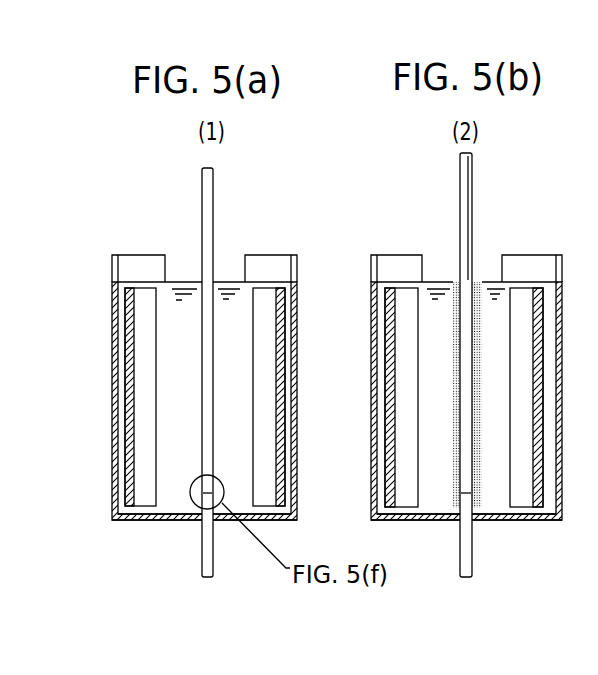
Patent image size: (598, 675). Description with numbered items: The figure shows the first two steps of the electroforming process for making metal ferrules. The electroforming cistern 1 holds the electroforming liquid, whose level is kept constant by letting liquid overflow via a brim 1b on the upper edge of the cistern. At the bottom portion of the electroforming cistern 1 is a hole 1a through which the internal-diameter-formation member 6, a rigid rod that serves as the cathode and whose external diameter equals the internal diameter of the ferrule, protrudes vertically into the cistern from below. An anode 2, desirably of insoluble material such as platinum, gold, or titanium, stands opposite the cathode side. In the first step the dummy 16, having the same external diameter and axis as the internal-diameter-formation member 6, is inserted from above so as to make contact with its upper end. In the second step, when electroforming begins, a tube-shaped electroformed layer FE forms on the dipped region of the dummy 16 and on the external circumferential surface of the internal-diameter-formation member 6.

In FIG. 5A, the electroforming cistern 1 is at (297, 414).
In FIG. 5B, the electroforming cistern 1 is at (562, 405).
In FIG. 5A, the hole 1a is at (197, 520).
In FIG. 5B, the hole 1a is at (457, 518).
In FIG. 5A, the brim 1b is at (297, 271).
In FIG. 5B, the brim 1b is at (562, 272).
In FIG. 5A, the anode 2 is at (145, 495).
In FIG. 5B, the anode 2 is at (405, 493).
In FIG. 5A, the internal-diameter-formation member 6 is at (213, 558).
In FIG. 5B, the internal-diameter-formation member 6 is at (477, 552).
In FIG. 5A, the dummy 16 is at (214, 190).
In FIG. 5B, the dummy 16 is at (473, 166).
In FIG. 5B, the tube-shaped electroformed layer FE is at (453, 322).